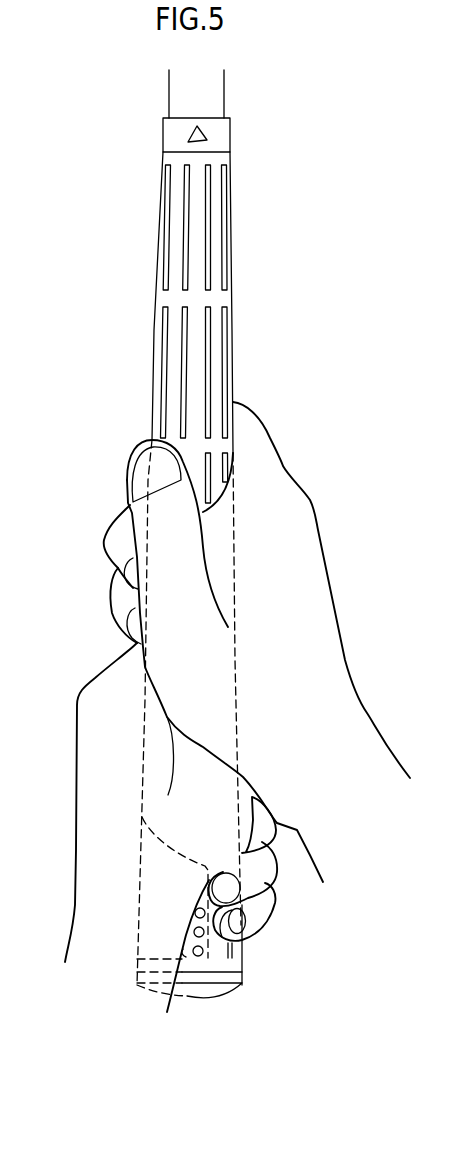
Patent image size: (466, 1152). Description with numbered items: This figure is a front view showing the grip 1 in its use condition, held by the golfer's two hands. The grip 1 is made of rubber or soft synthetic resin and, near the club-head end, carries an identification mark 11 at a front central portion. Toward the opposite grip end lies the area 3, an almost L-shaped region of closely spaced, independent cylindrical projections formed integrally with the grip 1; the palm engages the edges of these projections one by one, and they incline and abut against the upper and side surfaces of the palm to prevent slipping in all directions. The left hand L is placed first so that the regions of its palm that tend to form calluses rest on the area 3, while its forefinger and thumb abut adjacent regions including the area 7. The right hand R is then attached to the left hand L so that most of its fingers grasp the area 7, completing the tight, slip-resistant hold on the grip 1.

The grip 1 is at (233, 296).
The area having projections 3 is at (199, 957).
The area 7 is at (153, 327).
The identification mark 11 is at (207, 133).
The right hand R is at (283, 466).
The left hand L is at (77, 742).